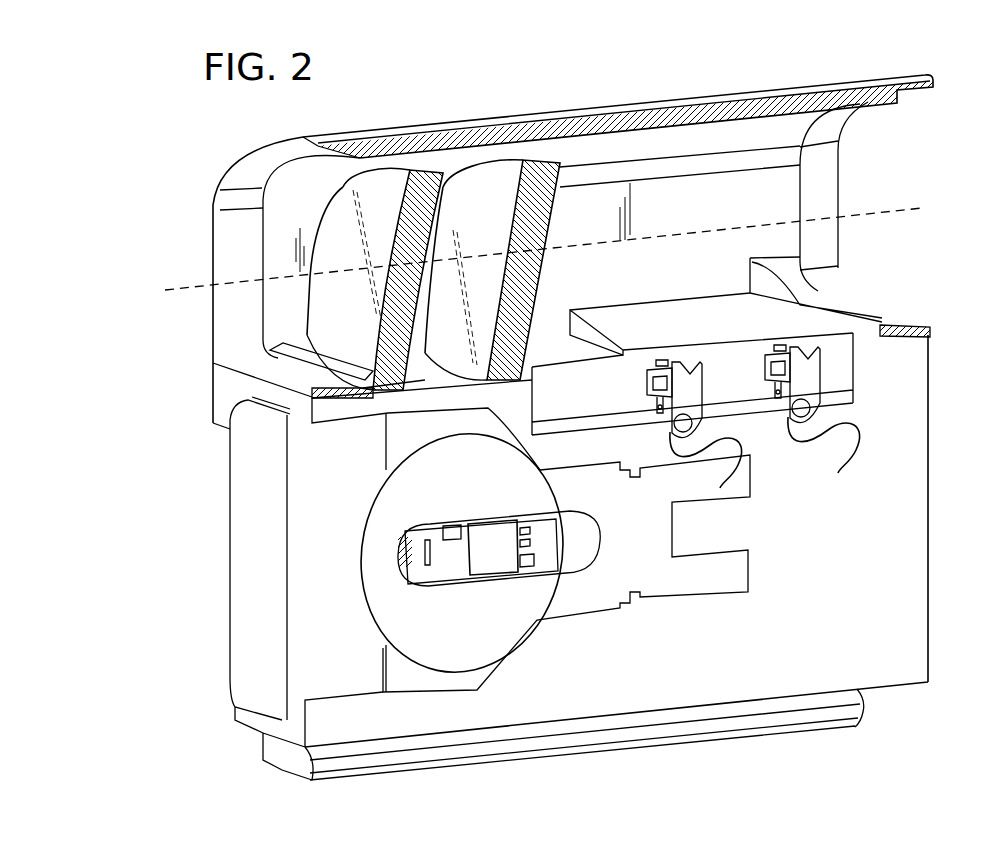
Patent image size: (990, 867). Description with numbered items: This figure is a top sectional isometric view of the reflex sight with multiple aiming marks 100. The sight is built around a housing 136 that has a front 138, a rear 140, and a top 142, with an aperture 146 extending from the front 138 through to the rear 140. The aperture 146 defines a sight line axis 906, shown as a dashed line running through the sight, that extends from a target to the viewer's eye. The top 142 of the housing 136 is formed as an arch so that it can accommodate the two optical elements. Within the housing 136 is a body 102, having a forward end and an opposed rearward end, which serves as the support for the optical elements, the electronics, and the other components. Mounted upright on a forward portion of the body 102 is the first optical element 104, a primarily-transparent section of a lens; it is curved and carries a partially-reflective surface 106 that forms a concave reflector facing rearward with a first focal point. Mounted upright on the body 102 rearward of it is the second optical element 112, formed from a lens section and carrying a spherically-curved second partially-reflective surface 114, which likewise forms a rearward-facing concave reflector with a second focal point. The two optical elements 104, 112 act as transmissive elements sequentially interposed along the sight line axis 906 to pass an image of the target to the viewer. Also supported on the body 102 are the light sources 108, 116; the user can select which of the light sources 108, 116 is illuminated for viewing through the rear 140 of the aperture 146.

The reflex sight with multiple aiming marks 100 is at (522, 78).
The body 102 is at (927, 532).
The first optical element 104 is at (354, 339).
The partially-reflective surface 106 is at (432, 224).
The light source 108 is at (672, 360).
The second optical element 112 is at (512, 199).
The second partially-reflective surface 114 is at (532, 280).
The light source 116 is at (800, 352).
The housing 136 is at (678, 99).
The front 138 is at (222, 187).
The rear 140 is at (930, 326).
The top 142 is at (370, 128).
The aperture 146 is at (242, 302).
The sight line axis 906 is at (660, 232).